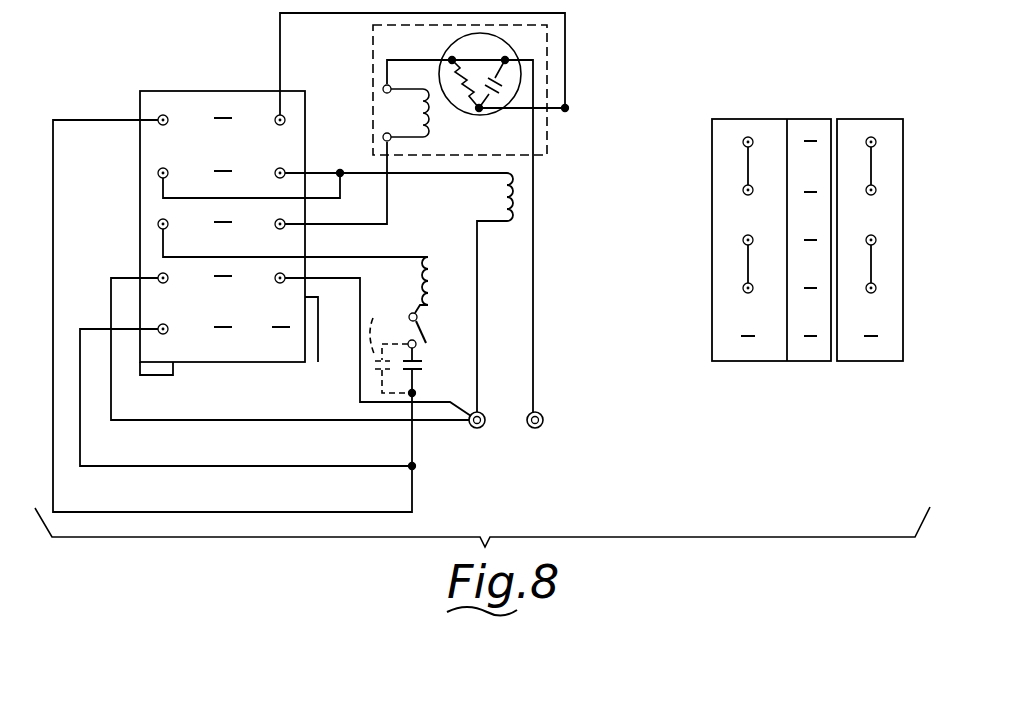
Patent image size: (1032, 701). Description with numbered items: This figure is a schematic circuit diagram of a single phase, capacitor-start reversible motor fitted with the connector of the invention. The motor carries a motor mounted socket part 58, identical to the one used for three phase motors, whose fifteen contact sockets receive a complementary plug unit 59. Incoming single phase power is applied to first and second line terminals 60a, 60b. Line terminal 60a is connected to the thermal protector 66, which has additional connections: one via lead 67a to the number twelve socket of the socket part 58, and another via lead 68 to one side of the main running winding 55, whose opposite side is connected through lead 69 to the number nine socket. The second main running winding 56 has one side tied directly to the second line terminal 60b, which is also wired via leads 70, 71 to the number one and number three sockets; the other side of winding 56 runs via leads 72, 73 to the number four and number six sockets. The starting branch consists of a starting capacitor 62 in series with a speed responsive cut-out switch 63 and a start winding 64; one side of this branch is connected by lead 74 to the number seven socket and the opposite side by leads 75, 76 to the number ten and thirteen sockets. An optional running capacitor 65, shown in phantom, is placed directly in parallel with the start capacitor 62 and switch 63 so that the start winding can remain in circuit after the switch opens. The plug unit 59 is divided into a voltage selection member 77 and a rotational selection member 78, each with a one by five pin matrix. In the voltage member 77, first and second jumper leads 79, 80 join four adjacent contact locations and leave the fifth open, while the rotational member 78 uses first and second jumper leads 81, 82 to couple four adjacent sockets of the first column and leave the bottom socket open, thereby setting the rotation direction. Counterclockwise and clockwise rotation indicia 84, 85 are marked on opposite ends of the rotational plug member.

The motor mounted socket part 58 is at (137, 96).
The main running winding 55 is at (437, 127).
The main running winding 56 is at (505, 204).
The plug unit 59 is at (760, 363).
The first line terminal 60a is at (530, 430).
The second line terminal 60b is at (468, 430).
The starting capacitor 62 is at (424, 364).
The speed responsive cut-out switch 63 is at (424, 330).
The start winding 64 is at (421, 285).
The optional running capacitor 65 is at (369, 332).
The thermal protector 66 is at (447, 55).
The lead 67a is at (566, 68).
The motor housing enclosure 68 is at (386, 66).
The lead 69 is at (388, 200).
The lead 70 is at (356, 370).
The lead 71 is at (280, 398).
The lead 72 is at (340, 198).
The lead 73 is at (340, 172).
The lead 74 is at (388, 257).
The lead 75 is at (265, 511).
The lead 76 is at (318, 465).
The voltage selection member 77 is at (880, 363).
The rotational selection member 78 is at (802, 363).
The first jumper lead 79 is at (871, 168).
The second jumper lead 80 is at (871, 262).
The first jumper lead 81 is at (748, 160).
The second jumper lead 82 is at (748, 258).
The counterclockwise rotation indicia 84 is at (733, 357).
The clockwise rotation indicia 85 is at (730, 131).